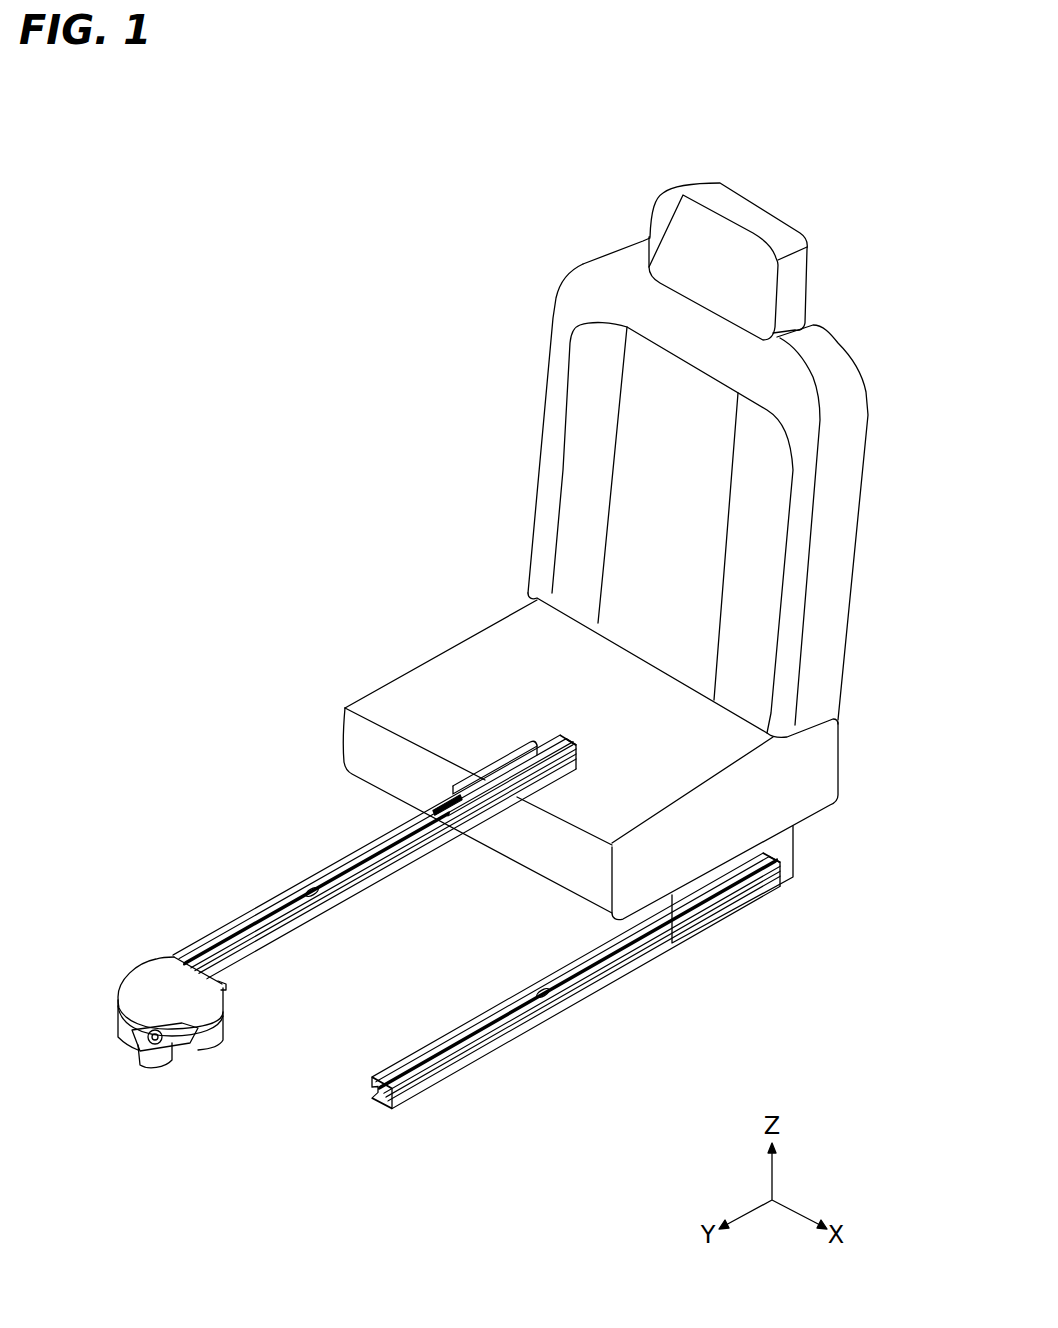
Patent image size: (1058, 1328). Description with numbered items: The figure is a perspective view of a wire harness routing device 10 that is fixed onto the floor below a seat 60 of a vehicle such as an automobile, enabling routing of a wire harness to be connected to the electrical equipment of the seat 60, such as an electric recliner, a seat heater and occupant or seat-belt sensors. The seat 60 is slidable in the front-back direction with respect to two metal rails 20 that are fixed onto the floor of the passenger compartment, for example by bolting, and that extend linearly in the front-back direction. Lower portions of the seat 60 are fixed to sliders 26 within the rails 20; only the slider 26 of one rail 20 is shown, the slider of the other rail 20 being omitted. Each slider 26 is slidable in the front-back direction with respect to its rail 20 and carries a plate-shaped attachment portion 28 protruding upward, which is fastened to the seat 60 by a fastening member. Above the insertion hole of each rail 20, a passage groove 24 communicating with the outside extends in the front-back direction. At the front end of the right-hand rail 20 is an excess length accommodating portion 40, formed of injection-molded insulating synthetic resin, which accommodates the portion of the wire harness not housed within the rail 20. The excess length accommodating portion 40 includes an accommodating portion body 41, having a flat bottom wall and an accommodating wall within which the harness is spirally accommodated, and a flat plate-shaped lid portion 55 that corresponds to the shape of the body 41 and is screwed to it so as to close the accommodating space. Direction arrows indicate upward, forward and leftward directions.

The wire harness routing device 10 is at (105, 965).
The rail 20 is at (476, 804).
The passage groove 24 is at (310, 890).
The slider 26 is at (470, 672).
The attachment portion 28 is at (500, 767).
The excess length accommodating portion 40 is at (230, 1012).
The accommodating portion body 41 is at (210, 1036).
The lid portion 55 is at (200, 1002).
The seat 60 is at (837, 555).